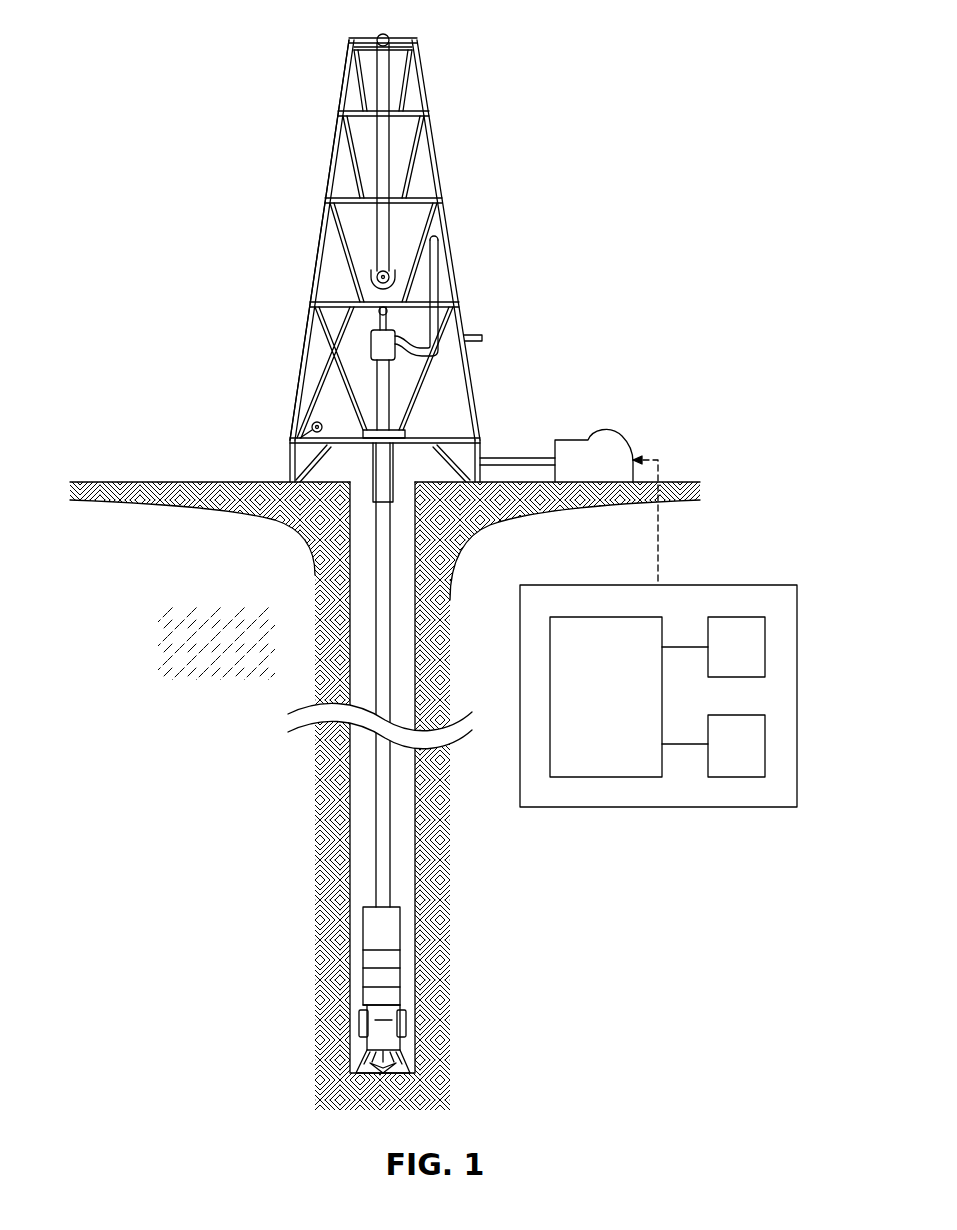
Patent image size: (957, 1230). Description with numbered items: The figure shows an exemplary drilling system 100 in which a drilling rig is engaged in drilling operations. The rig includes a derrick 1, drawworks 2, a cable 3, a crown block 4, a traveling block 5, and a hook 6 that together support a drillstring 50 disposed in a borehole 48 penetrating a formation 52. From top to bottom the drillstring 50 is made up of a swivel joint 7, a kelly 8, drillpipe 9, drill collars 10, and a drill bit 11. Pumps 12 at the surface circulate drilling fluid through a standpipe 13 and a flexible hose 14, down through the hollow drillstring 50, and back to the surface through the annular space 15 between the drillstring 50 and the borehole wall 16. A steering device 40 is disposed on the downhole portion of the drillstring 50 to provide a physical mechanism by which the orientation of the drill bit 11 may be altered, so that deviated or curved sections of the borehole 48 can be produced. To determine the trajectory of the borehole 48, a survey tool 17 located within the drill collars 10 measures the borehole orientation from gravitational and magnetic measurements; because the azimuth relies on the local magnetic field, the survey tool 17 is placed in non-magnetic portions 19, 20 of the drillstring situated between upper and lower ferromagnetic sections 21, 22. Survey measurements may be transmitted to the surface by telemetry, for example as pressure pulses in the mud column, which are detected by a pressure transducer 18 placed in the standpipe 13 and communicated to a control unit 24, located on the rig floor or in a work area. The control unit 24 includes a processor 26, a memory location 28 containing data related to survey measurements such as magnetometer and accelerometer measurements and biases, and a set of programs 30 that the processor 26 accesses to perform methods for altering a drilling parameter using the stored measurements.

The drilling system 100 is at (640, 95).
The derrick 1 is at (333, 148).
The drawworks 2 is at (310, 432).
The cable 3 is at (328, 284).
The crown block 4 is at (380, 35).
The traveling block 5 is at (372, 277).
The hook 6 is at (383, 310).
The swivel joint 7 is at (370, 345).
The kelly 8 is at (356, 478).
The drillpipe 9 is at (376, 630).
The drill collars 10 is at (356, 921).
The drill bit 11 is at (365, 1058).
The pumps 12 is at (612, 447).
The standpipe 13 is at (482, 438).
The flexible hose 14 is at (432, 332).
The annular space 15 is at (405, 660).
The borehole wall 16 is at (435, 590).
The survey tool 17 is at (372, 977).
The pressure transducer 18 is at (482, 338).
The non-magnetic portion 19 is at (395, 955).
The non-magnetic portion 20 is at (394, 997).
The upper ferromagnetic section 21 is at (392, 921).
The lower ferromagnetic section 22 is at (395, 1015).
The control unit 24 is at (720, 568).
The processor 26 is at (550, 752).
The memory location 28 is at (765, 640).
The set of programs 30 is at (765, 740).
The steering device 40 is at (360, 1025).
The borehole 48 is at (360, 793).
The drillstring 50 is at (360, 590).
The formation 52 is at (204, 656).